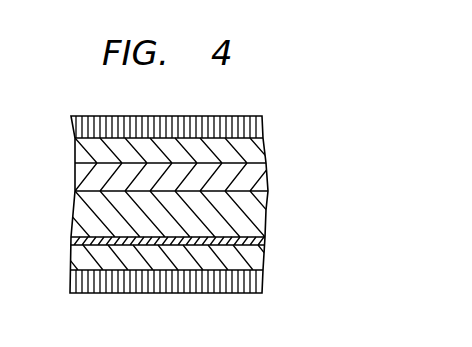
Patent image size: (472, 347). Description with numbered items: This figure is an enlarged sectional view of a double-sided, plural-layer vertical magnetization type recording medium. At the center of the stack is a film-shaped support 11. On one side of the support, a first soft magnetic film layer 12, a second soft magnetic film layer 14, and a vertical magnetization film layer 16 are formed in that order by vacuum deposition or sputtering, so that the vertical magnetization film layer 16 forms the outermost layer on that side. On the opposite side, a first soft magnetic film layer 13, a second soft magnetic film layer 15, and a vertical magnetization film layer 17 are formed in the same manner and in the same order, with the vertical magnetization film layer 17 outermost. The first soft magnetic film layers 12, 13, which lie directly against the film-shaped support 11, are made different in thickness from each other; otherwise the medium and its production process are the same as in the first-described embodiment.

The film-shaped support 11 is at (264, 222).
The first soft magnetic film layer 12 is at (262, 184).
The first soft magnetic film layer 13 is at (262, 246).
The second soft magnetic film layer 14 is at (265, 154).
The second soft magnetic film layer 15 is at (258, 262).
The vertical magnetization film layer 16 is at (263, 130).
The vertical magnetization film layer 17 is at (263, 289).